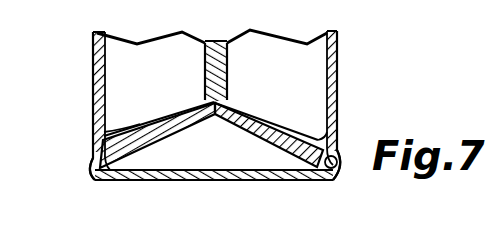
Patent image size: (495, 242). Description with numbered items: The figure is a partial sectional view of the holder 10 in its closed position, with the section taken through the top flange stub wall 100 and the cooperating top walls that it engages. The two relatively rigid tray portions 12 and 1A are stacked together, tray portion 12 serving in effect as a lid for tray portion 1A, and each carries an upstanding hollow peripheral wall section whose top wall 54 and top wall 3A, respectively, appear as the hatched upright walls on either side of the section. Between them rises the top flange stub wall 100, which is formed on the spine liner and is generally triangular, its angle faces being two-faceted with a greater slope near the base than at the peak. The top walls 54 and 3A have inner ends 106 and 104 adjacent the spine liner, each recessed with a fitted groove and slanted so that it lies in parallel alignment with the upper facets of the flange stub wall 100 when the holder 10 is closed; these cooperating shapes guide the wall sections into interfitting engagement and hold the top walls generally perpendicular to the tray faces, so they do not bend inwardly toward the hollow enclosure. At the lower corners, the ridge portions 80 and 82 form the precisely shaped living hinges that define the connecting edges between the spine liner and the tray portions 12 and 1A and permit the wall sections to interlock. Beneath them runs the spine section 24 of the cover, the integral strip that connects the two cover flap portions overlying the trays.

The tray portion 12 is at (93, 65).
The inner end of top wall 106 is at (136, 120).
The top wall 54 is at (176, 92).
The top wall 3A is at (267, 75).
The inner end of top wall 104 is at (296, 125).
The tray portion 1A is at (337, 47).
The holder 10 is at (340, 72).
The top flange stub wall 100 is at (221, 150).
The ridge portion 80 is at (98, 182).
The spine section 24 is at (189, 183).
The ridge portion 82 is at (312, 182).